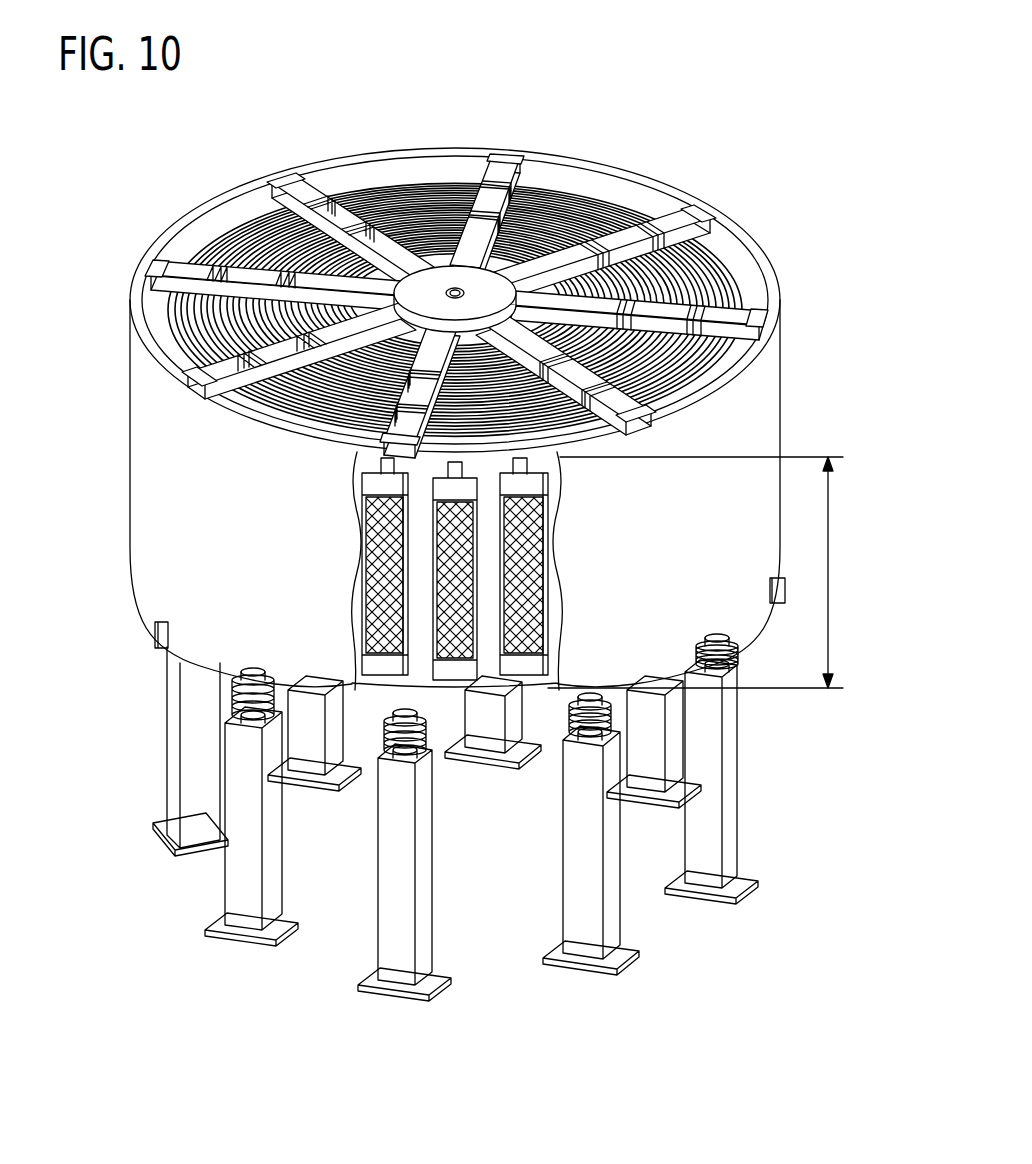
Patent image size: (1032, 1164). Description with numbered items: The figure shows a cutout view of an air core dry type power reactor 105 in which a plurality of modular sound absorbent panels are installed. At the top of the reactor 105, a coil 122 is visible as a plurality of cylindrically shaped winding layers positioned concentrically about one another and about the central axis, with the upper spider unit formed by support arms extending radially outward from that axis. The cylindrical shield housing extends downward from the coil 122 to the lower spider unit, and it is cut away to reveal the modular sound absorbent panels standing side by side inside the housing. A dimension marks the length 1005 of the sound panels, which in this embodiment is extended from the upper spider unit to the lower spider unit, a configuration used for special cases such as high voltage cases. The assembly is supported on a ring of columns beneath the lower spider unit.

The air core dry type power reactor 105 is at (755, 171).
The coil 122 is at (428, 212).
The length of the sound panels 1005 is at (828, 573).